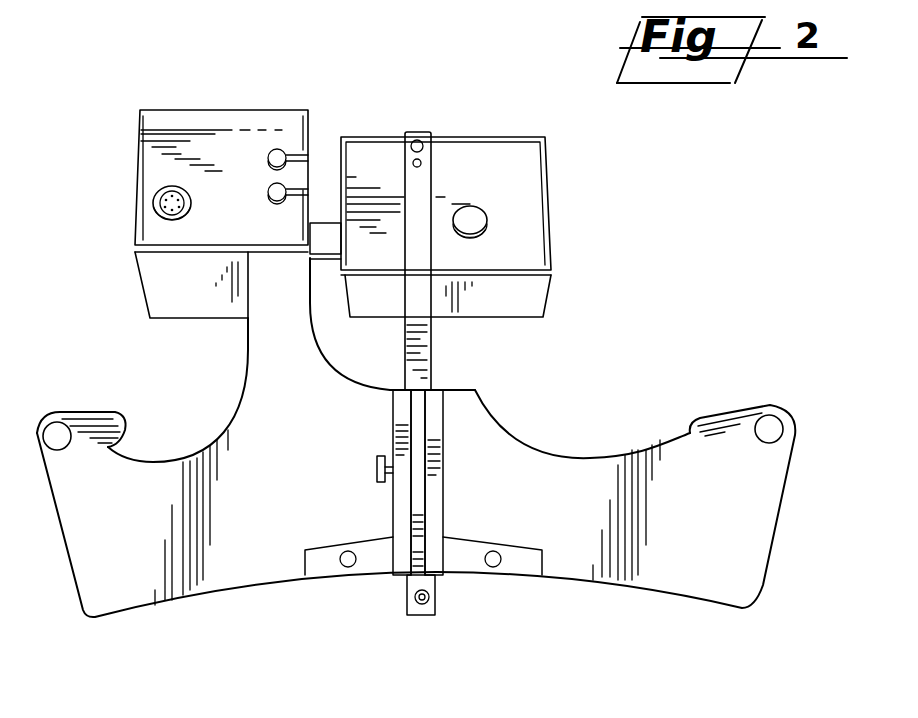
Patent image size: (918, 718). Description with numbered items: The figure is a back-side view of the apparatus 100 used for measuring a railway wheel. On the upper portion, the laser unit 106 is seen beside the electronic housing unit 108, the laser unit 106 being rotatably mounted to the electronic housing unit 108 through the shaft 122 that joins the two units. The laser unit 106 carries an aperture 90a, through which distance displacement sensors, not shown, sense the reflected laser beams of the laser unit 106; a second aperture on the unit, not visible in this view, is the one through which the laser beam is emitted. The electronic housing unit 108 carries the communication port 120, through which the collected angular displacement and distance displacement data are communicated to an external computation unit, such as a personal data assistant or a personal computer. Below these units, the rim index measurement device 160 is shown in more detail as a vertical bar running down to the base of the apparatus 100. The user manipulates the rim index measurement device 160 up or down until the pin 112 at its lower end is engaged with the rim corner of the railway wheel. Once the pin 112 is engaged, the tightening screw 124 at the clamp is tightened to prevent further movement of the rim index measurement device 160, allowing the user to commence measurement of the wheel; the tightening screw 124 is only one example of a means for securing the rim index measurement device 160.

The apparatus 100 is at (688, 182).
The laser unit 106 is at (573, 218).
The electronic housing unit 108 is at (222, 110).
The pin 112 is at (432, 590).
The communication port 120 is at (153, 202).
The shaft 122 is at (328, 222).
The tightening screw 124 is at (377, 468).
The rim index measurement device 160 is at (453, 345).
The aperture 90a is at (473, 210).